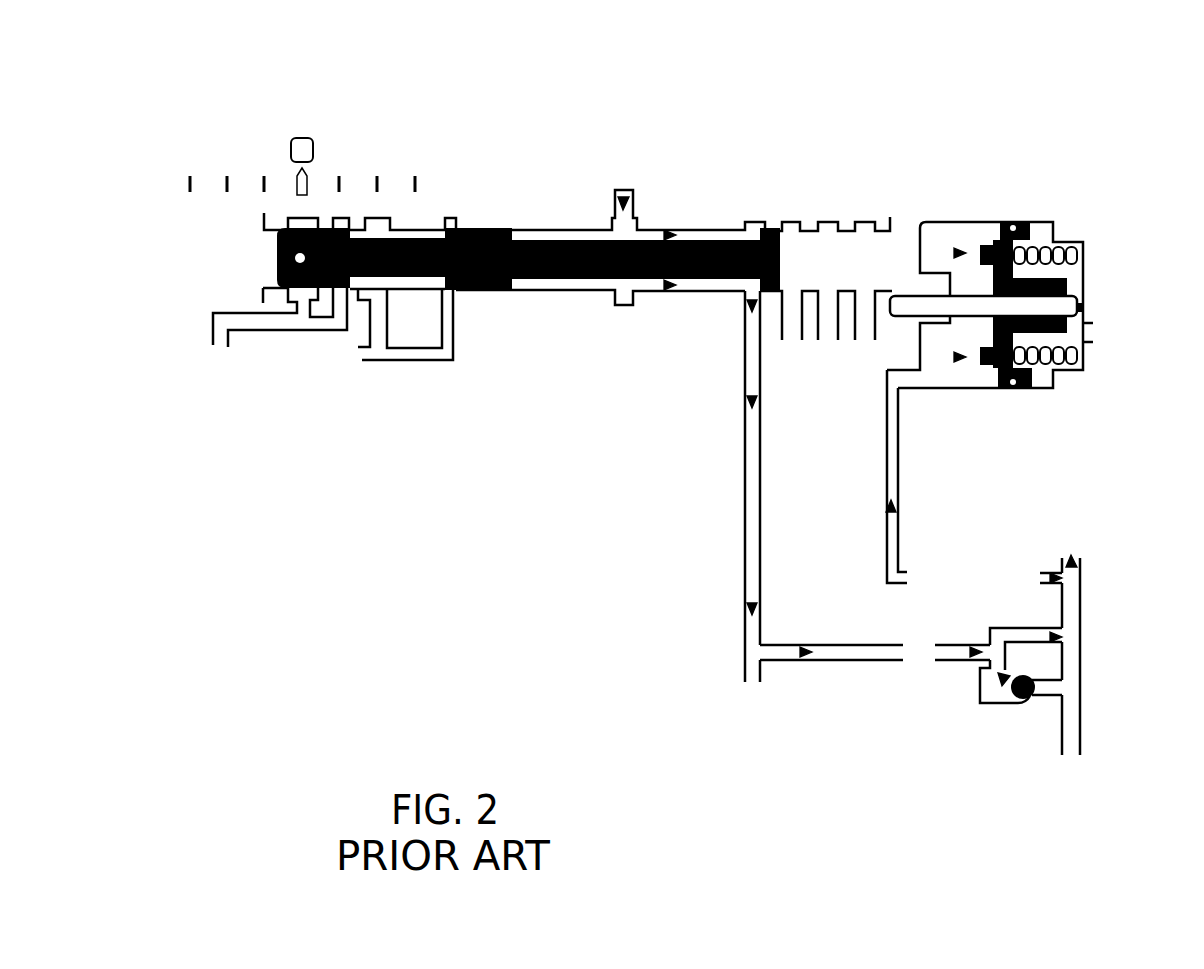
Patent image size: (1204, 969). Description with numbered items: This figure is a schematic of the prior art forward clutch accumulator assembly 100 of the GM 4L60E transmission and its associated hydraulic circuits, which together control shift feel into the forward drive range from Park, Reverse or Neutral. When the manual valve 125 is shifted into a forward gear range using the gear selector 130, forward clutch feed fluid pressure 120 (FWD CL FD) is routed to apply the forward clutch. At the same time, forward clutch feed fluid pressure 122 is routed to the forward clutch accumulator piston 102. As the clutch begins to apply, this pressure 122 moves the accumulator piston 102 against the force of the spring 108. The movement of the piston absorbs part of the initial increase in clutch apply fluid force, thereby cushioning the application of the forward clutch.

The forward clutch accumulator assembly 100 is at (975, 138).
The accumulator piston 102 is at (990, 391).
The spring 108 is at (1080, 253).
The forward clutch feed fluid pressure 120 is at (1067, 603).
The forward clutch feed fluid pressure 122 is at (888, 463).
The manual valve 125 is at (541, 197).
The gear selector 130 is at (304, 112).